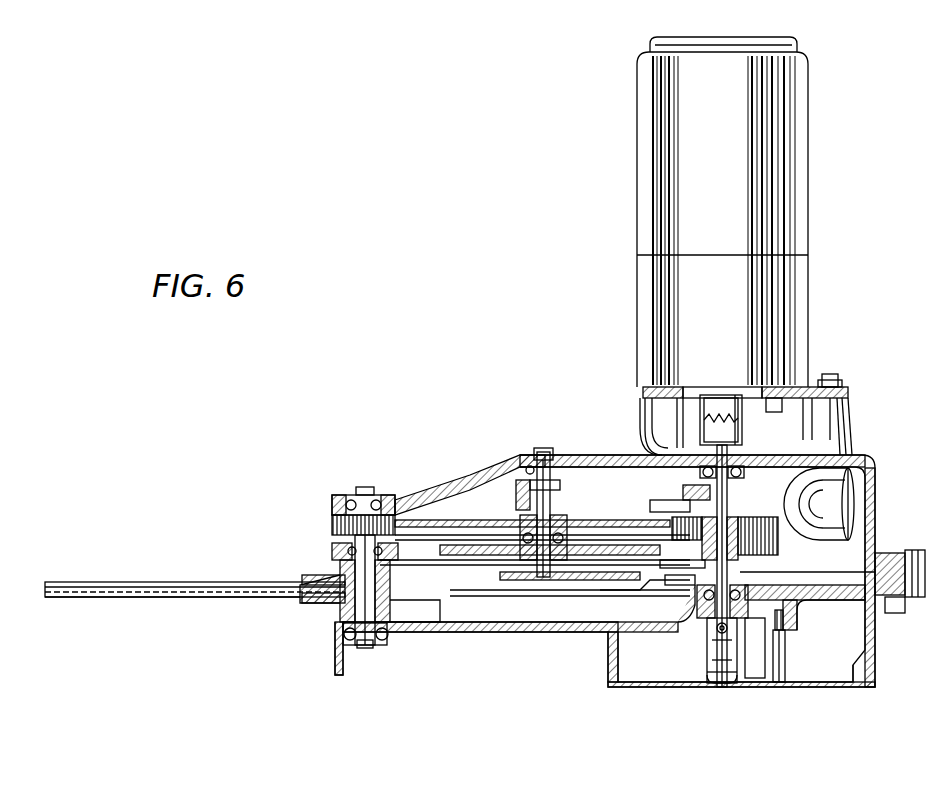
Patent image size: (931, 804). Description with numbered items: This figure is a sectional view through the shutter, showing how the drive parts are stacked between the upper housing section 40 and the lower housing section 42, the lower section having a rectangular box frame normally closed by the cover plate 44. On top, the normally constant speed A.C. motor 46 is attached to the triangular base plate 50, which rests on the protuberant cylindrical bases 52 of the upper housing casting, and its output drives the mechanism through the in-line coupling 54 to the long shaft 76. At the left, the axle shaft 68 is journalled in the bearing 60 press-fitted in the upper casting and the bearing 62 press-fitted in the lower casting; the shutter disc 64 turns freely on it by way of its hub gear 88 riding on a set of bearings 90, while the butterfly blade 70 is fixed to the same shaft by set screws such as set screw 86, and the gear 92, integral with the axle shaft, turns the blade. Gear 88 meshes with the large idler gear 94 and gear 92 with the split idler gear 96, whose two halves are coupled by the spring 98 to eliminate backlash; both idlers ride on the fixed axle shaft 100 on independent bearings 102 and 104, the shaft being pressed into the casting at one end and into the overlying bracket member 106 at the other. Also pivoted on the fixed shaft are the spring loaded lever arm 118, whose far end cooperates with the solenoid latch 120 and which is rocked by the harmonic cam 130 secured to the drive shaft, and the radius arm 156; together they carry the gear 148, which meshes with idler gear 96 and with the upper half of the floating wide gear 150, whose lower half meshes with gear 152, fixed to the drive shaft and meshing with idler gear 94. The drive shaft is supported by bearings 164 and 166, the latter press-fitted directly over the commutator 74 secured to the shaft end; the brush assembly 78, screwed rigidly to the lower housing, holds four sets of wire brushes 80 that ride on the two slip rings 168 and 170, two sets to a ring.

The upper housing section 40 is at (440, 492).
The lower housing section 42 is at (530, 634).
The cover plate 44 is at (705, 692).
The A.C. motor 46 is at (637, 210).
The base plate 50 is at (848, 395).
The protuberant cylindrical bases 52 is at (640, 420).
The in-line coupling 54 is at (700, 408).
The bearing 60 is at (340, 497).
The bearing 62 is at (350, 650).
The shutter disc 64 is at (190, 583).
The axle shaft 68 is at (345, 615).
The butterfly blade 70 is at (260, 605).
The commutator 74 is at (725, 690).
The shaft 76 is at (700, 600).
The brush assembly 78 is at (823, 683).
The wire brushes 80 is at (777, 655).
The set screw 86 is at (390, 648).
The gear 88 is at (335, 545).
The bearings 90 is at (340, 560).
The gear 92 is at (338, 520).
The idler gear 94 is at (470, 557).
The split idler gear 96 is at (478, 528).
The spring 98 is at (500, 480).
The fixed axle shaft 100 is at (538, 452).
The bearing 102 is at (500, 518).
The bearing 104 is at (525, 485).
The bracket member 106 is at (520, 582).
The lever arm 118 is at (515, 567).
The solenoid latch 120 is at (848, 487).
The harmonic cam 130 is at (612, 455).
The gear 148 is at (665, 585).
The wide gear 150 is at (805, 512).
The gear 152 is at (790, 540).
The radius arm 156 is at (648, 567).
The bearing 164 is at (690, 497).
The bearing 166 is at (680, 576).
The slip ring 168 is at (745, 655).
The slip ring 170 is at (712, 683).